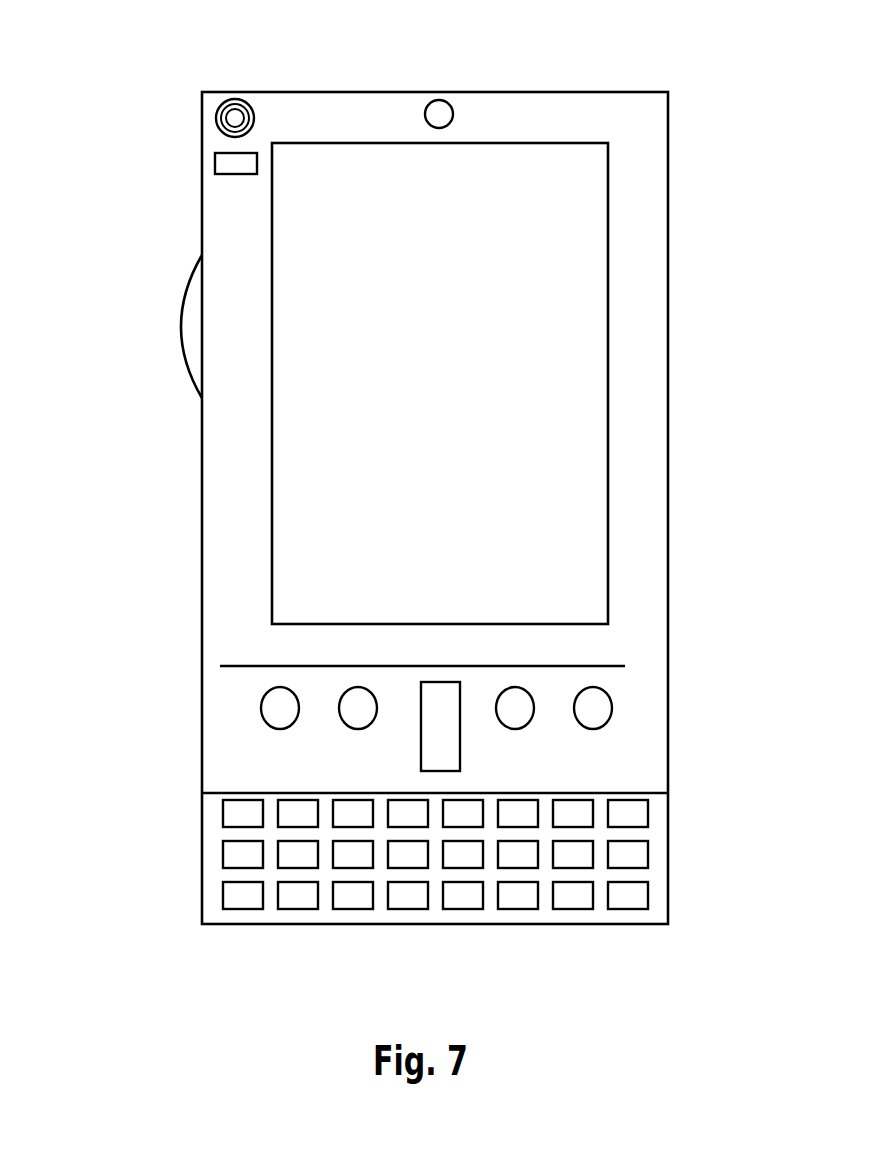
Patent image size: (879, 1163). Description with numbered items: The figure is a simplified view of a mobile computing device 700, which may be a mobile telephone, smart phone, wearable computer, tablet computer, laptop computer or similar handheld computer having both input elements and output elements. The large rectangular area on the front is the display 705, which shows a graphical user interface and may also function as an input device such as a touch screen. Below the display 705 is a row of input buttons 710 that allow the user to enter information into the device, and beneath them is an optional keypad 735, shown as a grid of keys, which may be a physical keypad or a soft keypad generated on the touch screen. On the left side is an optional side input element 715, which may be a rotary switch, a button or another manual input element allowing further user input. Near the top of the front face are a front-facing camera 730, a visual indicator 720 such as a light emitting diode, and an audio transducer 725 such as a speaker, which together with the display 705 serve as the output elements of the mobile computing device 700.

The mobile computing device 700 is at (658, 108).
The display 705 is at (375, 542).
The input buttons 710 is at (440, 732).
The side input element 715 is at (193, 327).
The visual indicator 720 is at (215, 165).
The audio transducer 725 is at (218, 118).
The front-facing camera 730 is at (449, 114).
The keypad 735 is at (210, 900).